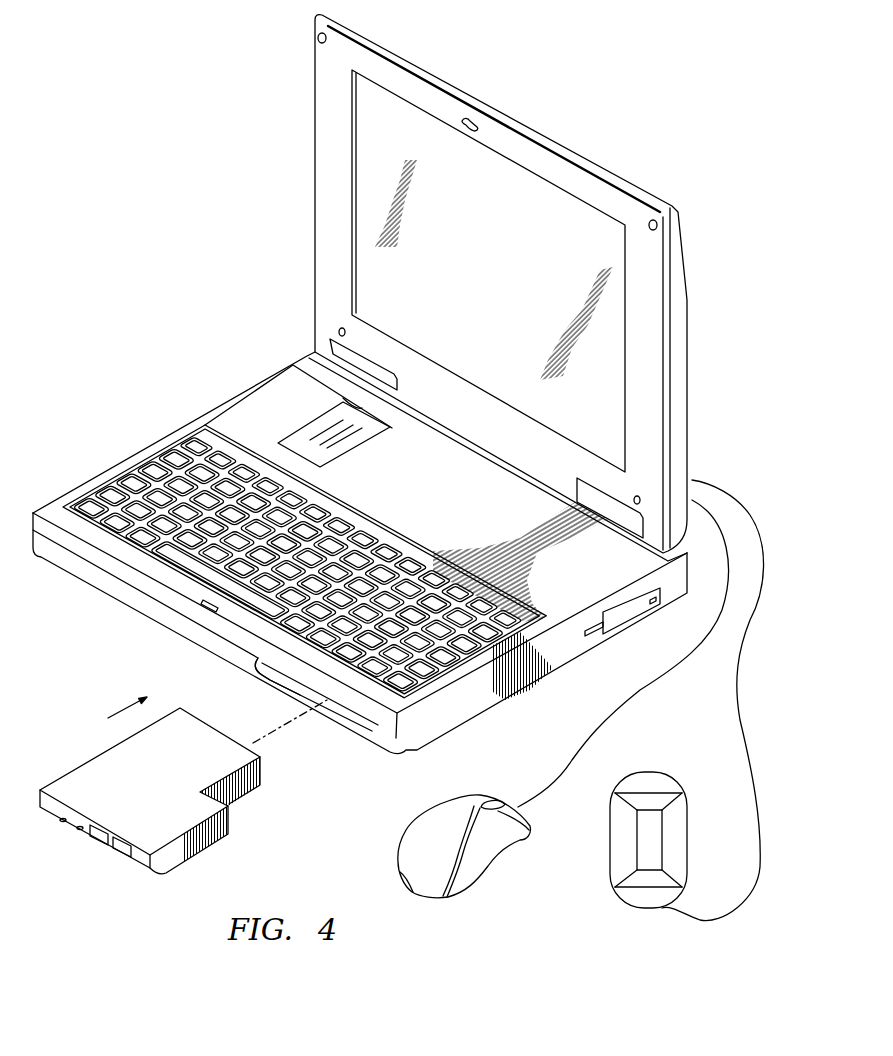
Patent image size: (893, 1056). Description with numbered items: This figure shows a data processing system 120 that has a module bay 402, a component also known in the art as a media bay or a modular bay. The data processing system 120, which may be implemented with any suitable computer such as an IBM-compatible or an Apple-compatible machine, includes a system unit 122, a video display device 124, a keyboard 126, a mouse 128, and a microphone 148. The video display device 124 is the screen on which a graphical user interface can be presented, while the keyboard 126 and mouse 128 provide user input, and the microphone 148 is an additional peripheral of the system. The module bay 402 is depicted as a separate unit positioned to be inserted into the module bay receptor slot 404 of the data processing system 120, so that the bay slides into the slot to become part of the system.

The data processing system 120 is at (360, 384).
The system unit 122 is at (501, 284).
The video display device 124 is at (497, 387).
The keyboard 126 is at (167, 467).
The mouse 128 is at (437, 828).
The microphone 148 is at (688, 840).
The module bay 402 is at (82, 773).
The module bay receptor slot 404 is at (293, 687).